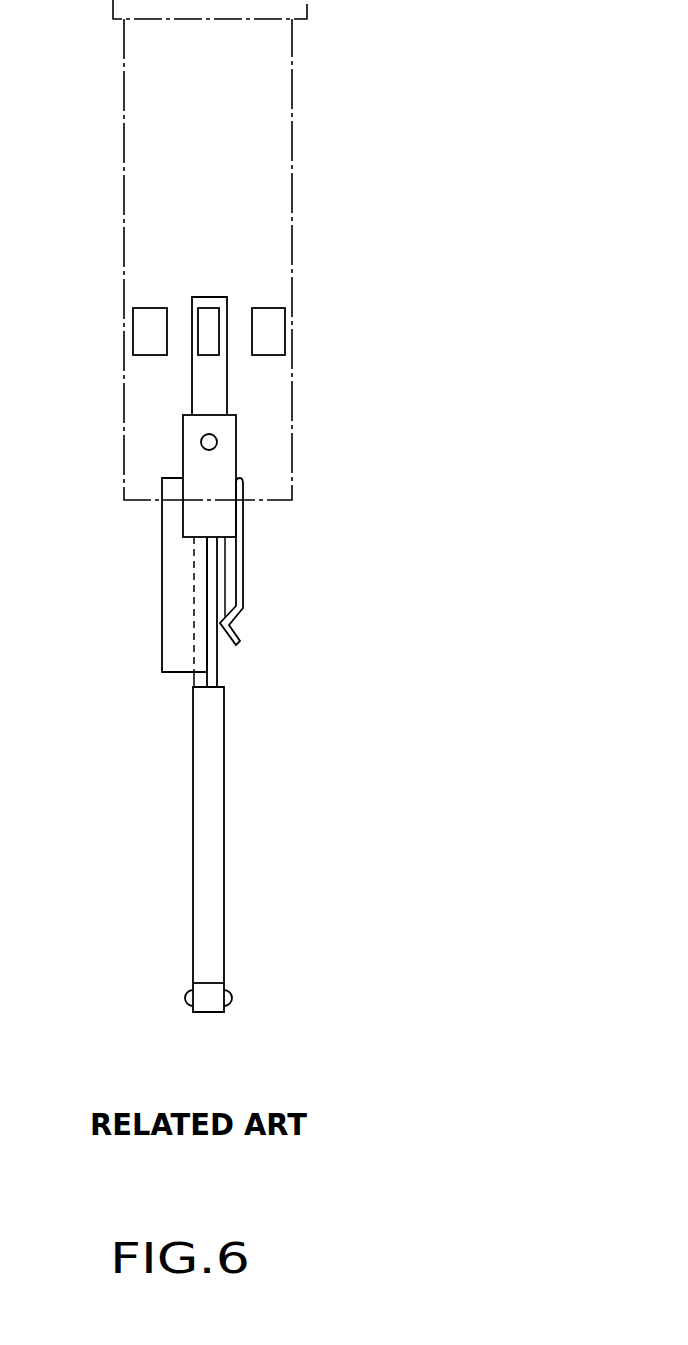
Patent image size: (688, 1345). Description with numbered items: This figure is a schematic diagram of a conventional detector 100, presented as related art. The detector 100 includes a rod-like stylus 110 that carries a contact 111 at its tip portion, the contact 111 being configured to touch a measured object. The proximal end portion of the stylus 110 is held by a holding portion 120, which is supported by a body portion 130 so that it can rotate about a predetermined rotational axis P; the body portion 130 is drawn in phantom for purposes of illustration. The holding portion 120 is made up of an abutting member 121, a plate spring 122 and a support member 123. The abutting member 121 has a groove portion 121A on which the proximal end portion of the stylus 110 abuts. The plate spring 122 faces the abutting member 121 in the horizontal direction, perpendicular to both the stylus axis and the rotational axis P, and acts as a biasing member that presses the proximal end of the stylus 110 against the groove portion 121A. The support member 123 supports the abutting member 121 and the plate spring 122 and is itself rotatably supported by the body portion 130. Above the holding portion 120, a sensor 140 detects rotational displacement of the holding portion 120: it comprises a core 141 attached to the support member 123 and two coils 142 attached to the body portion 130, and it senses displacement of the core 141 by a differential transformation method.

The detector 100 is at (412, 149).
The stylus 110 is at (205, 812).
The contact 111 is at (188, 997).
The holding portion 120 is at (319, 542).
The abutting member 121 is at (167, 550).
The groove portion 121A is at (200, 662).
The plate spring 122 is at (243, 578).
The support member 123 is at (183, 426).
The body portion 130 is at (293, 84).
The sensor 140 is at (254, 271).
The core 141 is at (207, 318).
The coils 142 is at (143, 333).
The rotational axis P is at (215, 438).